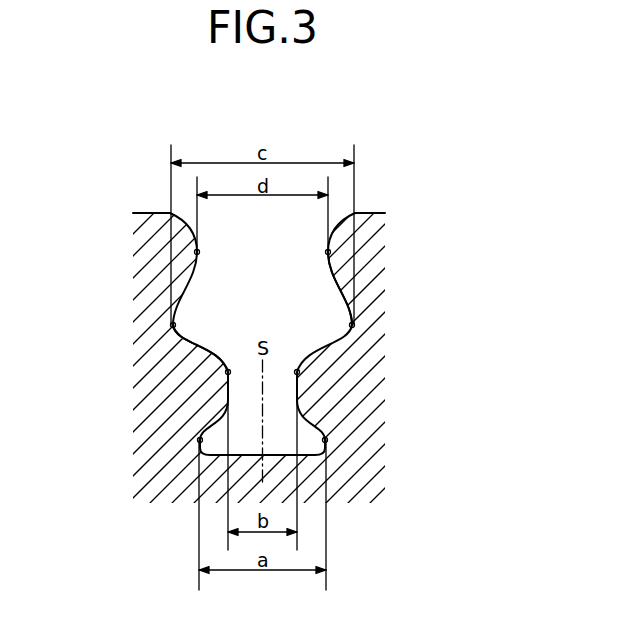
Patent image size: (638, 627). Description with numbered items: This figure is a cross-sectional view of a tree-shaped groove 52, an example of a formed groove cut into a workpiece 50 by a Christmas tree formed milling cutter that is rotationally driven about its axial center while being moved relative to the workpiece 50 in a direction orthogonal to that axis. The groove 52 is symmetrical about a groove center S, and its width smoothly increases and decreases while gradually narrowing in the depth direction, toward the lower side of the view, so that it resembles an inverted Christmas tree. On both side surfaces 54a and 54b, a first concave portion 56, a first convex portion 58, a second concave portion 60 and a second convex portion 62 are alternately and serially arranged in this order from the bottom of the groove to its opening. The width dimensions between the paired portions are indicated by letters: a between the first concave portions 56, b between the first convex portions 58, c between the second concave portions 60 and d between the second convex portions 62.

The workpiece 50 is at (180, 488).
The tree-shaped groove 52 is at (342, 116).
The side surface 54a is at (205, 343).
The side surface 54b is at (324, 270).
The first concave portion 56 is at (197, 452).
The first convex portion 58 is at (214, 362).
The second concave portion 60 is at (172, 333).
The second convex portion 62 is at (194, 240).